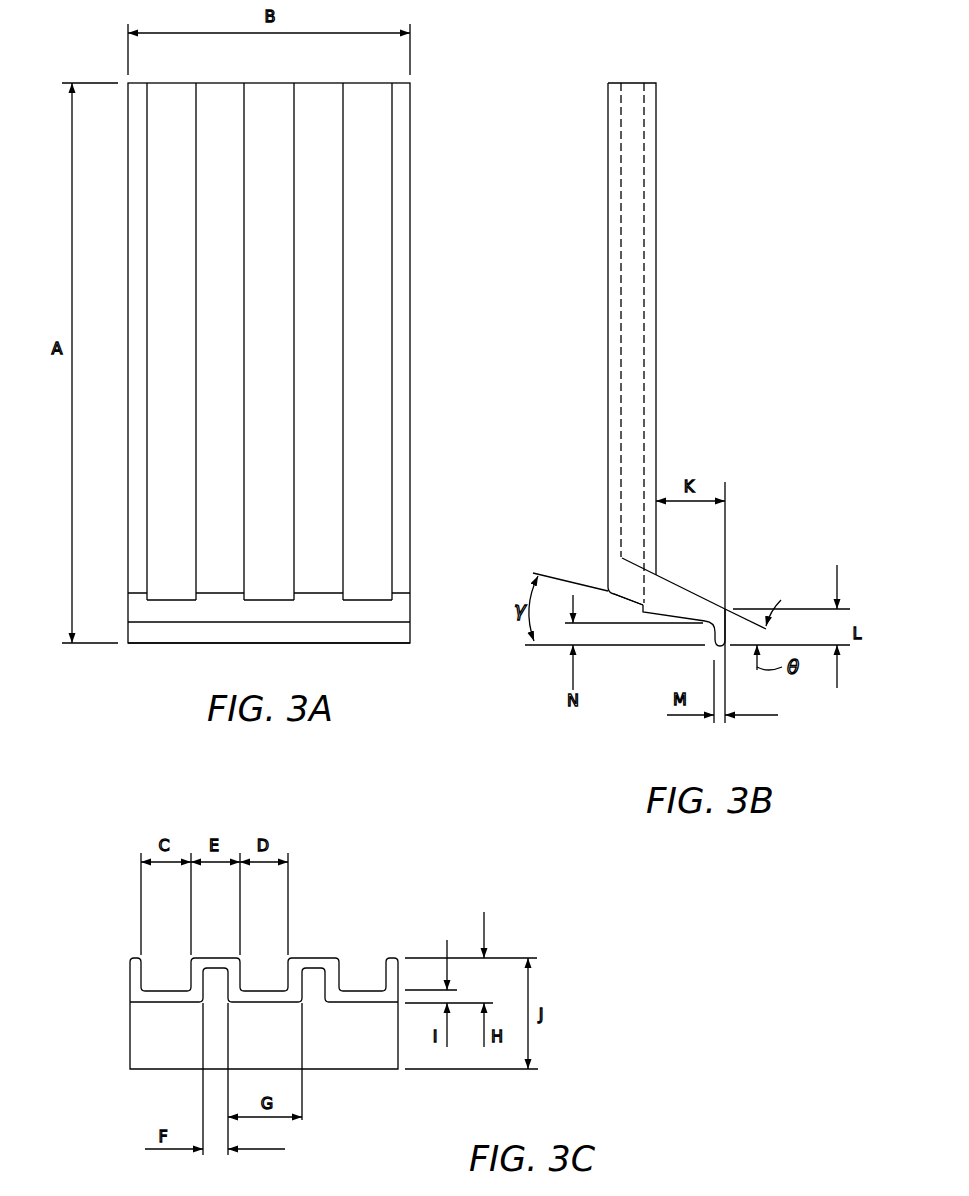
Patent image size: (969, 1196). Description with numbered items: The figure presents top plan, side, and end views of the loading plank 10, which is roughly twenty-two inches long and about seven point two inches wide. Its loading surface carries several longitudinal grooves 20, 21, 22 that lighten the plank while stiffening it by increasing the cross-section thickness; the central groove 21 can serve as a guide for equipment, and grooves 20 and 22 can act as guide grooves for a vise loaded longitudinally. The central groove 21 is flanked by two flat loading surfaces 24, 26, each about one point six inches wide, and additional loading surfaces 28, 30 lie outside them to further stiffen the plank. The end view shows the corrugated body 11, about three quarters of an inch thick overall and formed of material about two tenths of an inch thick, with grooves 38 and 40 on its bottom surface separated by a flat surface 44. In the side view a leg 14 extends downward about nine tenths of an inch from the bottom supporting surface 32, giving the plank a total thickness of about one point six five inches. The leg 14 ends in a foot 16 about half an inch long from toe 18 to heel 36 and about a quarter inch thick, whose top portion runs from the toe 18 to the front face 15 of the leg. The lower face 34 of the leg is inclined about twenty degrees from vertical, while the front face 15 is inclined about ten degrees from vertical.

In FIG. 3A, the loading plank 10 is at (452, 52).
In FIG. 3C, the body 11 is at (132, 978).
In FIG. 3A, the leg 14 is at (410, 600).
In FIG. 3B, the leg 14 is at (698, 602).
In FIG. 3C, the leg 14 is at (130, 1050).
In FIG. 3B, the front face 15 is at (643, 608).
In FIG. 3A, the foot 16 is at (410, 636).
In FIG. 3B, the toe 18 is at (720, 649).
In FIG. 3C, the groove 20 is at (163, 965).
In FIG. 3C, the central groove 21 is at (263, 965).
In FIG. 3C, the groove 22 is at (360, 965).
In FIG. 3C, the flat loading surface 24 is at (213, 956).
In FIG. 3C, the flat loading surface 26 is at (314, 956).
In FIG. 3C, the additional loading surface 28 is at (130, 957).
In FIG. 3C, the additional loading surface 30 is at (393, 957).
In FIG. 3B, the bottom supporting surface 32 is at (656, 401).
In FIG. 3B, the lower face 34 is at (672, 581).
In FIG. 3B, the heel 36 is at (727, 610).
In FIG. 3C, the groove 38 is at (313, 1000).
In FIG. 3C, the groove 40 is at (217, 1001).
In FIG. 3C, the flat surface 44 is at (263, 1003).